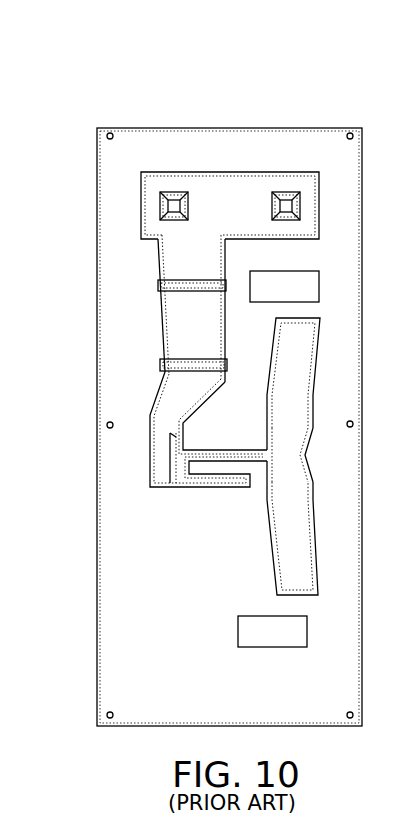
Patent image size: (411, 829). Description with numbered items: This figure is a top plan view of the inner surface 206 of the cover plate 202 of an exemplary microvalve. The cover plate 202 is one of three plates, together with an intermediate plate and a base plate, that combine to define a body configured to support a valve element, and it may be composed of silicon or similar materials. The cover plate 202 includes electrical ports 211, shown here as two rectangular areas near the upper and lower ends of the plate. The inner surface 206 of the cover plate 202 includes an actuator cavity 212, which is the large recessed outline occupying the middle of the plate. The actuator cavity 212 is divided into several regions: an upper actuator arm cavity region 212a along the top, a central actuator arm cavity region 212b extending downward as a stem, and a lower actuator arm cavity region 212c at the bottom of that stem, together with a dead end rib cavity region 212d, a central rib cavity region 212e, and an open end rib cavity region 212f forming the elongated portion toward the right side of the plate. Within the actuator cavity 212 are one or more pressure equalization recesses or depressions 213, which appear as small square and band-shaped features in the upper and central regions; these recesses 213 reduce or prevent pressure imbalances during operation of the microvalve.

The cover plate 202 is at (159, 55).
The inner surface 206 is at (329, 140).
The electrical ports 211 is at (308, 290).
The actuator cavity 212 is at (228, 198).
The upper actuator arm cavity region 212a is at (150, 232).
The central actuator arm cavity region 212b is at (185, 332).
The lower actuator arm cavity region 212c is at (160, 463).
The dead end rib cavity region 212d is at (305, 340).
The central rib cavity region 212e is at (300, 462).
The open end rib cavity region 212f is at (305, 578).
The pressure equalization recesses 213 is at (172, 205).